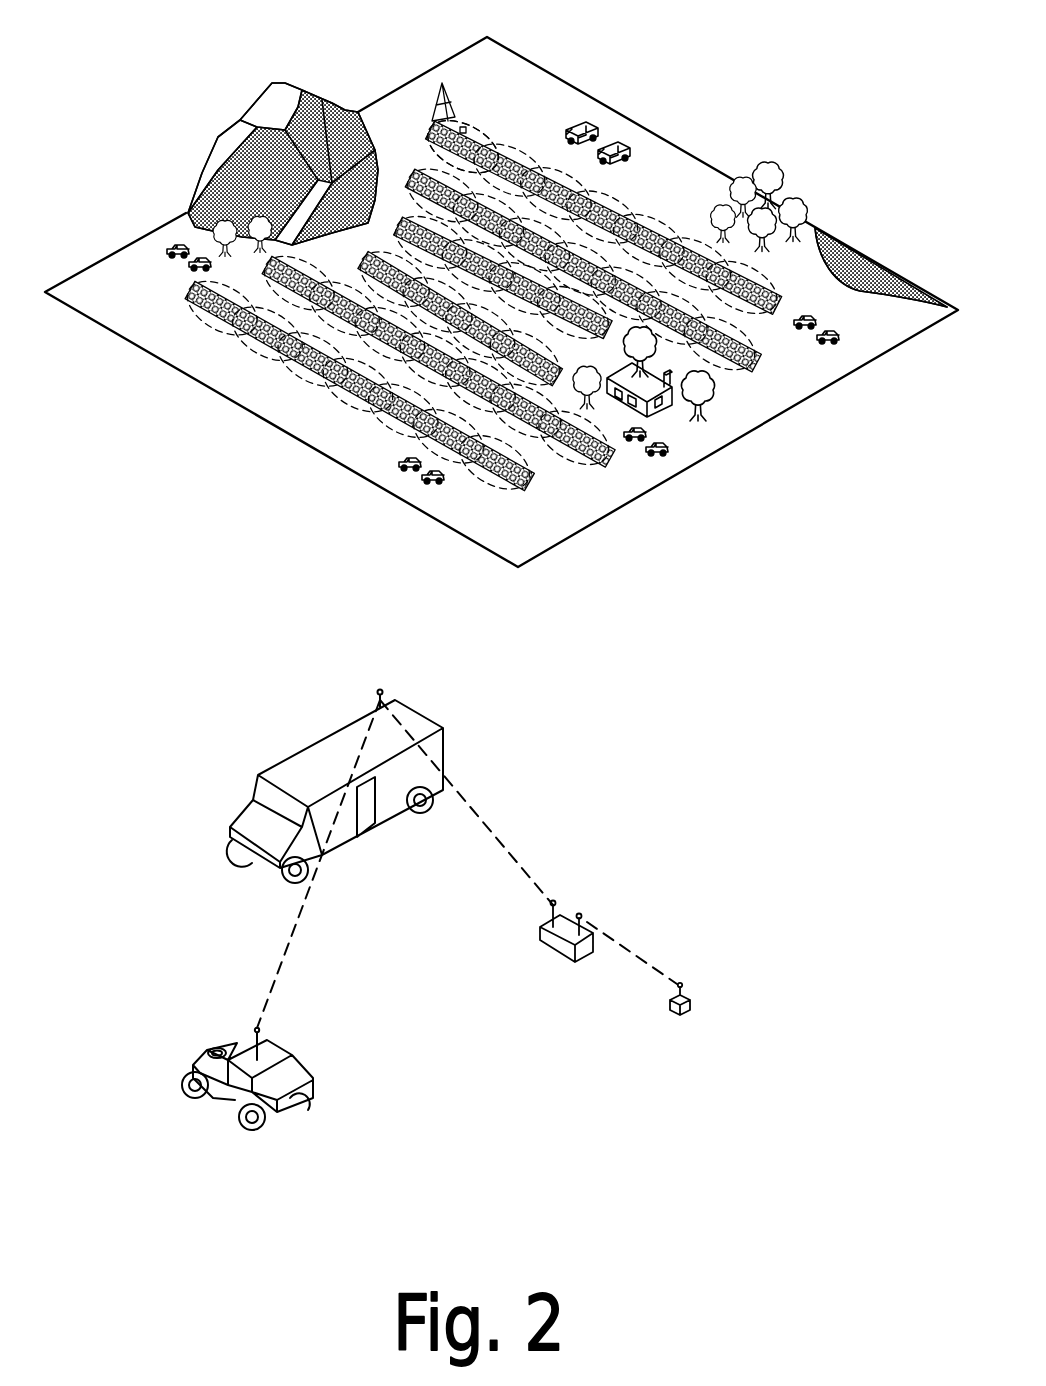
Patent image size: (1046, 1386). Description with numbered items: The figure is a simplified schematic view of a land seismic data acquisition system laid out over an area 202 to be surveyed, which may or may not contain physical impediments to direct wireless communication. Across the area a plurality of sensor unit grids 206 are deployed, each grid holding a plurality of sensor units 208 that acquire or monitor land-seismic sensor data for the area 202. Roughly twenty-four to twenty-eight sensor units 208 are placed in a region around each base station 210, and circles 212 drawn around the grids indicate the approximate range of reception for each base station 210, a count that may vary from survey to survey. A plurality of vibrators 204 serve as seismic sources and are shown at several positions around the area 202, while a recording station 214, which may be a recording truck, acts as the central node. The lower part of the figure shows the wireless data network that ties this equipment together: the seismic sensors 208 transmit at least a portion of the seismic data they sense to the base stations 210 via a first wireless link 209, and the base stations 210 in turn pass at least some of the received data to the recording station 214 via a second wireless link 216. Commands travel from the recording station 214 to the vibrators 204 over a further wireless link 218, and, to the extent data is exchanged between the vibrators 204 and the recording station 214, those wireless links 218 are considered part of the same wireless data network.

The area to be surveyed 202 is at (543, 115).
The vibrator 204 is at (163, 247).
The sensor unit grid 206 is at (355, 255).
The sensor unit 208 is at (440, 122).
The first wireless link 209 is at (627, 950).
The base station 210 is at (463, 127).
The circle 212 is at (485, 117).
The recording station 214 is at (608, 127).
The second wireless link 216 is at (485, 805).
The wireless link 218 is at (292, 932).